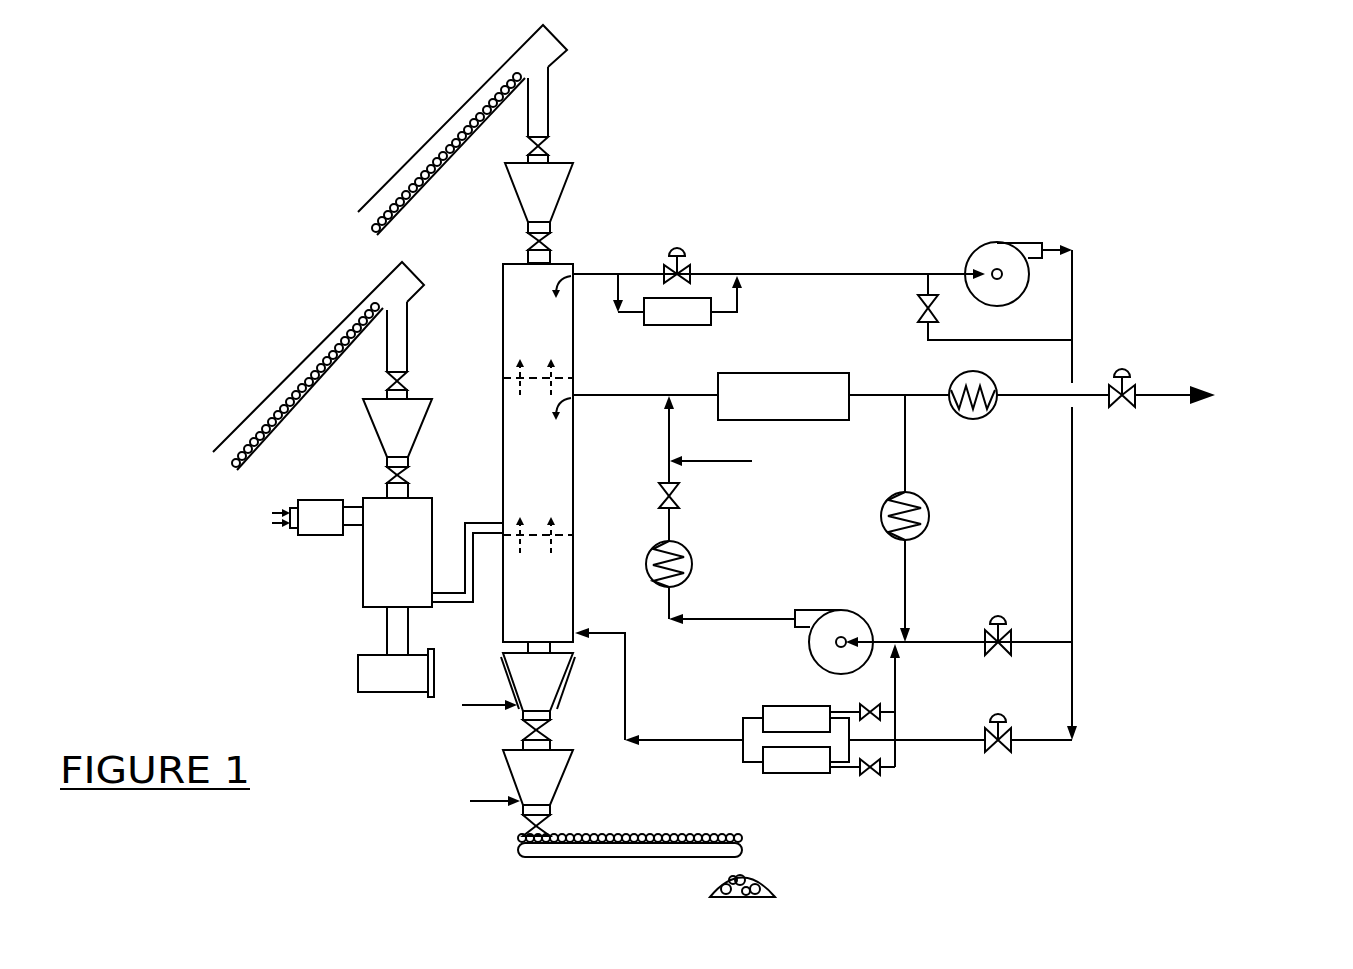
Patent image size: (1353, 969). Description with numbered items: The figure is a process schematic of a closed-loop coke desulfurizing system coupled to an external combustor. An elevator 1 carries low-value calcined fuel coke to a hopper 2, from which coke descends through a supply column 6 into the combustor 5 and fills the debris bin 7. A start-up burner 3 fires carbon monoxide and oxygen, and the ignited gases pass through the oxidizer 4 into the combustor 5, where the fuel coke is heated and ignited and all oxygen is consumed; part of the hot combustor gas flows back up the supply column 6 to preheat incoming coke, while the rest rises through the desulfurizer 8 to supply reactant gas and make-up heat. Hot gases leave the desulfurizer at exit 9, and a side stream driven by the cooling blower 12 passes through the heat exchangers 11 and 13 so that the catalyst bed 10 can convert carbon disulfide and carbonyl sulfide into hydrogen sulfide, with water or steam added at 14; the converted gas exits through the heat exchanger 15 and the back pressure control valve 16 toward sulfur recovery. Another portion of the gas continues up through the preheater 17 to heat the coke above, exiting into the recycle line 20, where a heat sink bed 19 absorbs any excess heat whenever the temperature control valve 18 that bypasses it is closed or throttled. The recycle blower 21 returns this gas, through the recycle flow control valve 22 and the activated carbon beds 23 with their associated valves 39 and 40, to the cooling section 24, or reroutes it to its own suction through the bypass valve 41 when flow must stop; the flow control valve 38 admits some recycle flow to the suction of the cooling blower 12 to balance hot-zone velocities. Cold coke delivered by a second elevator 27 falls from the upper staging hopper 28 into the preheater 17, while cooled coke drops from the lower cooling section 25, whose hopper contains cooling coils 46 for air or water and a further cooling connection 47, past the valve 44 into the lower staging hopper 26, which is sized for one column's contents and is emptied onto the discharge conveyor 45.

The elevator 1 is at (227, 428).
The hopper 2 is at (380, 425).
The start-up burner 3 is at (268, 517).
The oxidizer 4 is at (320, 527).
The combustor 5 is at (368, 572).
The supply column 6 is at (413, 488).
The debris bin 7 is at (368, 682).
The desulfurizer 8 is at (518, 403).
The desulfurizer gas exit 9 is at (582, 399).
The catalyst bed 10 is at (802, 413).
The heat exchanger 11 is at (925, 523).
The cooling blower 12 is at (822, 652).
The heat exchanger 13 is at (650, 567).
The water or steam addition 14 is at (757, 463).
The heat exchanger 15 is at (988, 410).
The back pressure control valve 16 is at (1137, 405).
The preheater 17 is at (515, 307).
The control valve 18 is at (676, 245).
The heat sink bed 19 is at (666, 315).
The recycle line 20 is at (783, 272).
The recycle blower 21 is at (993, 258).
The recycle flow control valve 22 is at (1005, 750).
The activated carbon beds 23 is at (782, 770).
The cooling section 24 is at (517, 623).
The lower cooling section 25 is at (520, 664).
The lower staging hopper 26 is at (515, 767).
The second conveyor 27 is at (383, 181).
The upper staging hopper 28 is at (533, 187).
The flow control valve 38 is at (995, 618).
The valve 39 is at (878, 704).
The valve 40 is at (880, 780).
The recycle cooling blower bypass valve 41 is at (920, 305).
The valve 44 is at (525, 728).
The discharge conveyor 45 is at (577, 853).
The cooling coils 46 is at (462, 705).
The cooling medium inlet 47 is at (470, 801).